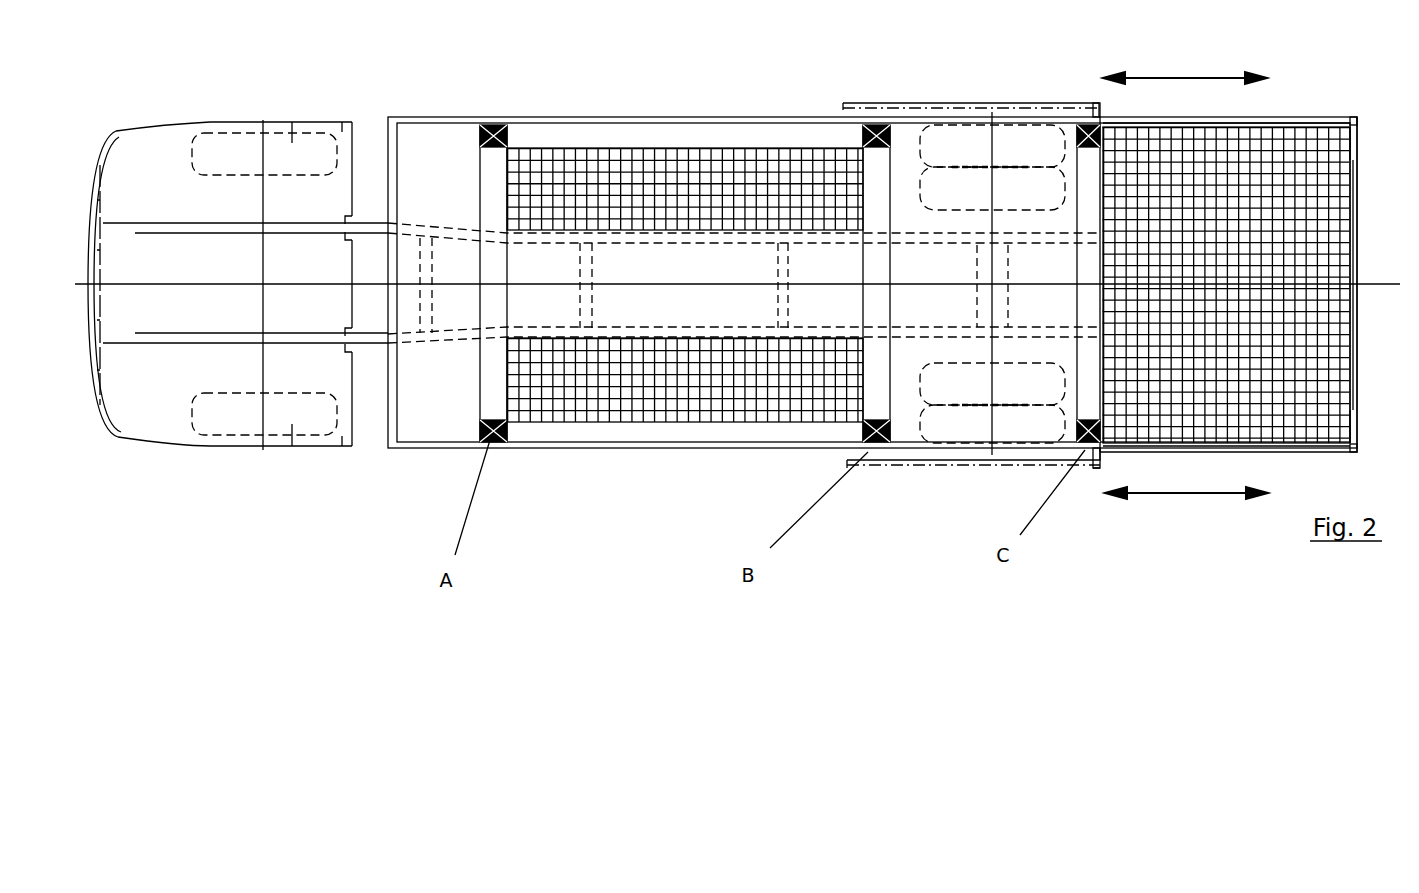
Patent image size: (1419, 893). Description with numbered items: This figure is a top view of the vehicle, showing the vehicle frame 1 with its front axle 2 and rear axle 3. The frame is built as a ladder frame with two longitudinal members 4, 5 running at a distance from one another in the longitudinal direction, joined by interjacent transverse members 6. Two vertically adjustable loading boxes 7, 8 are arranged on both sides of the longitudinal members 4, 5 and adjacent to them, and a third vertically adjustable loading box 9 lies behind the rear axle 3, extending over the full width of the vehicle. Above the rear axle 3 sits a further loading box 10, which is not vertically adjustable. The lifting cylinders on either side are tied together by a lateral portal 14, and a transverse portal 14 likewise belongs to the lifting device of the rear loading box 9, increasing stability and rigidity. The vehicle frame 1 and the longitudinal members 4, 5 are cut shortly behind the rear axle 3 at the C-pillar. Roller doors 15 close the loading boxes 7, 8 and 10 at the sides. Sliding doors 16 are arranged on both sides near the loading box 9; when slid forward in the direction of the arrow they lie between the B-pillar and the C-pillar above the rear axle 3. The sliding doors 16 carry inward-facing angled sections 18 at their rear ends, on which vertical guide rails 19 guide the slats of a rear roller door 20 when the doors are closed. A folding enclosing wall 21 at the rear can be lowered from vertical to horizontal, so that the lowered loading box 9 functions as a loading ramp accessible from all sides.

The vehicle frame 1 is at (440, 345).
The front axle 2 is at (245, 425).
The rear axle 3 is at (983, 450).
The longitudinal member 4 is at (509, 338).
The longitudinal member 5 is at (523, 243).
The transverse member 6 is at (777, 265).
The loading box 7 is at (577, 430).
The loading box 8 is at (553, 150).
The third loading box 9 is at (1300, 150).
The further loading box 10 is at (898, 150).
The portal 14 is at (693, 137).
The roller door 15 is at (647, 122).
The sliding door 16 is at (947, 110).
The angled section 18 is at (1100, 112).
The vertical guide rail 19 is at (1357, 135).
The roller door 20 is at (1357, 315).
The folding enclosing wall 21 is at (1357, 387).